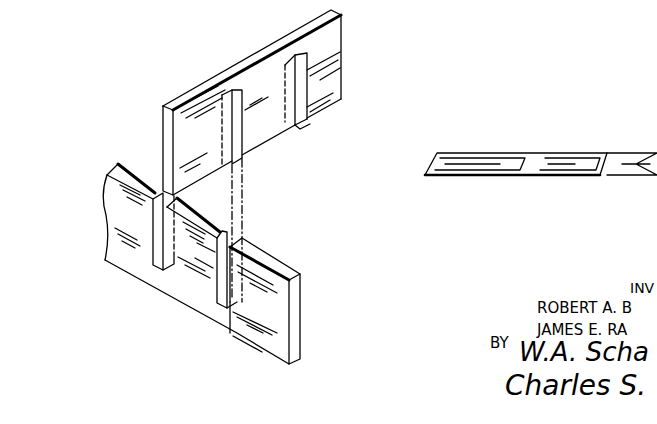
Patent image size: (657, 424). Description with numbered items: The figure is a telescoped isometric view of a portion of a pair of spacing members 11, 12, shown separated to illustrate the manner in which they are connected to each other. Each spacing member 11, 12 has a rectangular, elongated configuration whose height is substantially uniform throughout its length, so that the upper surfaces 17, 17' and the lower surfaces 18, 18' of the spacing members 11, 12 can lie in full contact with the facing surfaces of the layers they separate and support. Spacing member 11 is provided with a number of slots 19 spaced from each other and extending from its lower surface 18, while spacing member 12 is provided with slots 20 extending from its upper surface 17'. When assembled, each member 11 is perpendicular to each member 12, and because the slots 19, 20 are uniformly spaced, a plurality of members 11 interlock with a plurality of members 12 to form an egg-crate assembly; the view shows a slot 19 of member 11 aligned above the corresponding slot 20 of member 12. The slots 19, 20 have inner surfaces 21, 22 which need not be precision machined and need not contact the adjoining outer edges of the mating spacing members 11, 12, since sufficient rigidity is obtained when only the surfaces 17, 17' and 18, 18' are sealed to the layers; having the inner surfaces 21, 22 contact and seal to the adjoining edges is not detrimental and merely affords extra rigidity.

The upper surface of spacing member 17 is at (252, 97).
The upper surface of spacing member 17' is at (229, 301).
The spacing member 11 is at (183, 120).
The spacing member 12 is at (120, 211).
The inner surface of slot 21 is at (312, 83).
The lower surface of spacing member 18 is at (253, 196).
The slot 19 is at (297, 126).
The lower surface of spacing member 18' is at (220, 342).
The slot 20 is at (236, 277).
The inner surface of slot 22 is at (222, 276).